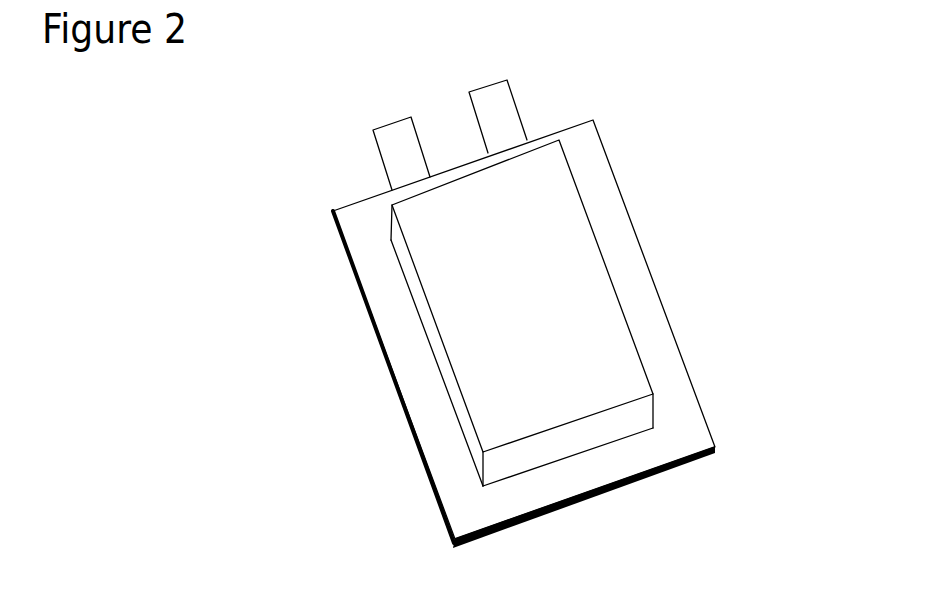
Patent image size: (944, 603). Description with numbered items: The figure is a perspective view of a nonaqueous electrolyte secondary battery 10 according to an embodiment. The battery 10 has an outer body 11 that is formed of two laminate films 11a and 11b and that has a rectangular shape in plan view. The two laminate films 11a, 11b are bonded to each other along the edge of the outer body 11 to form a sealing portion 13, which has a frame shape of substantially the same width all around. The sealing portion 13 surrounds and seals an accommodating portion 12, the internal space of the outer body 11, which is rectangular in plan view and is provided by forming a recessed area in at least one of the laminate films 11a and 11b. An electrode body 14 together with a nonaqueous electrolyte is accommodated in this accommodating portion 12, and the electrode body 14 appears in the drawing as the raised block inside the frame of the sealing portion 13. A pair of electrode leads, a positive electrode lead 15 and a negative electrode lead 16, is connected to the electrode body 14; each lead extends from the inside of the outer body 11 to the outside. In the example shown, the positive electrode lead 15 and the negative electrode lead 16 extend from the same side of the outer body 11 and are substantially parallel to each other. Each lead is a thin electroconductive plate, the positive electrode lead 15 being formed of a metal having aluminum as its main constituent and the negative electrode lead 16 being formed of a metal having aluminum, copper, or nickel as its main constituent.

The nonaqueous electrolyte secondary battery 10 is at (686, 71).
The outer body 11 is at (596, 334).
The laminate film 11a is at (688, 417).
The laminate film 11b is at (708, 463).
The accommodating portion 12 is at (442, 281).
The sealing portion 13 is at (407, 378).
The electrode body 14 is at (568, 254).
The positive electrode lead 15 is at (390, 145).
The negative electrode lead 16 is at (498, 102).